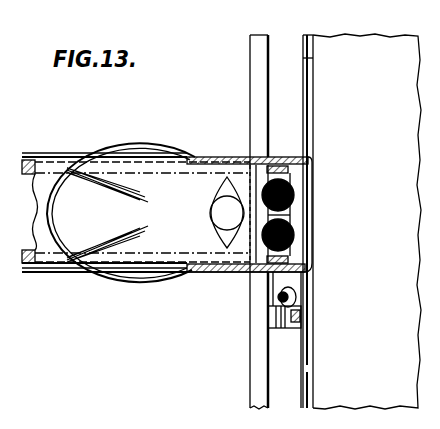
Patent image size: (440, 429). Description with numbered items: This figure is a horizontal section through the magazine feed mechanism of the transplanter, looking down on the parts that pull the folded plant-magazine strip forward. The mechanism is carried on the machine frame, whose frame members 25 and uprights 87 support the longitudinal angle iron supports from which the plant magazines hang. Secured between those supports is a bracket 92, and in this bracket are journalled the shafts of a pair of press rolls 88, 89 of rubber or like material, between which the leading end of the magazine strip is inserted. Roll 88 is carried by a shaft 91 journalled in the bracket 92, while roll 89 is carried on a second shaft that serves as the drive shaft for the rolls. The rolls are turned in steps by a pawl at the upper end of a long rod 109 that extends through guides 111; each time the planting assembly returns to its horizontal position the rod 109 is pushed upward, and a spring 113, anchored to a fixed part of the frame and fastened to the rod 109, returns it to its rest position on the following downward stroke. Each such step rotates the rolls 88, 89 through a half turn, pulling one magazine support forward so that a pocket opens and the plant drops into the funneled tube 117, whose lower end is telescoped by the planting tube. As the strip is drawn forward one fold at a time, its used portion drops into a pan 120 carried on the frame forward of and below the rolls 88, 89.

The frame members 25 is at (33, 158).
The funneled tube 117 is at (115, 148).
The uprights 87 is at (243, 157).
The bracket 92 is at (282, 157).
The pan 120 is at (336, 43).
The press roll 88 is at (295, 192).
The shaft 91 is at (295, 198).
The press roll 89 is at (295, 238).
The spring 113 is at (297, 298).
The rod 109 is at (298, 322).
The guides 111 is at (268, 327).